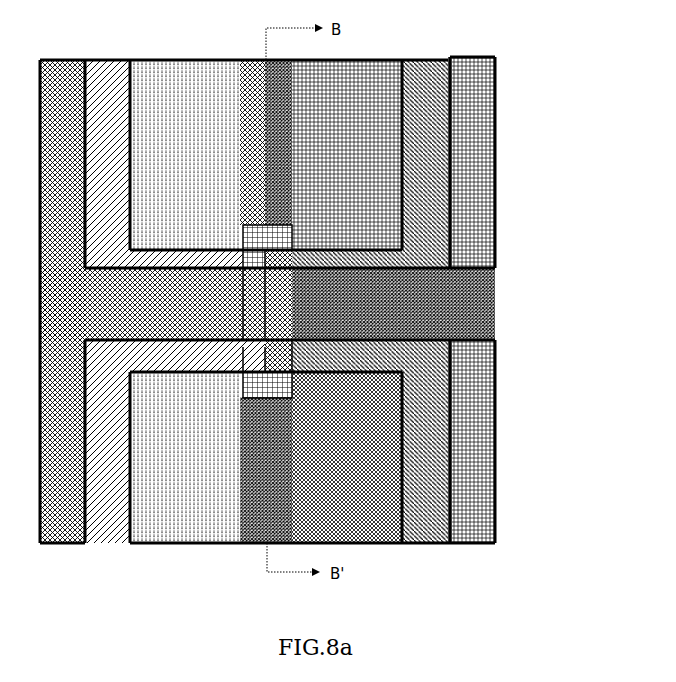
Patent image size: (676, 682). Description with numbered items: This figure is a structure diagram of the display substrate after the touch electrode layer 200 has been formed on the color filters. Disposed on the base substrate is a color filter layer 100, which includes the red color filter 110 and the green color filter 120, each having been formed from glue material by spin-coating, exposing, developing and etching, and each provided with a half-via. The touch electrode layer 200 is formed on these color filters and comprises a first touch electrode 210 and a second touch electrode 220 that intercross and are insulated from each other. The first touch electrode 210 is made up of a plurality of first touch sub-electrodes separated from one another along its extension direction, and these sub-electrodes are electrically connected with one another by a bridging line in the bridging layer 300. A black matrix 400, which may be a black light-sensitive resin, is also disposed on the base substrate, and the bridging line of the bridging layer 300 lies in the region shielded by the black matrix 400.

The color filter layer 100 is at (327, 198).
The red color filter 110 is at (97, 222).
The green color filter 120 is at (497, 114).
The touch electrode layer 200 is at (327, 300).
The first touch electrode 210 is at (497, 220).
The second touch electrode 220 is at (497, 272).
The bridging layer 300 is at (498, 468).
The black matrix 400 is at (322, 543).